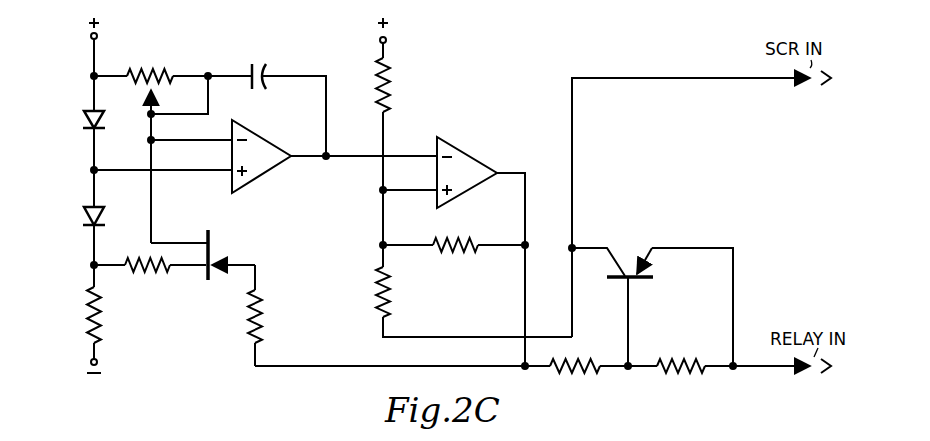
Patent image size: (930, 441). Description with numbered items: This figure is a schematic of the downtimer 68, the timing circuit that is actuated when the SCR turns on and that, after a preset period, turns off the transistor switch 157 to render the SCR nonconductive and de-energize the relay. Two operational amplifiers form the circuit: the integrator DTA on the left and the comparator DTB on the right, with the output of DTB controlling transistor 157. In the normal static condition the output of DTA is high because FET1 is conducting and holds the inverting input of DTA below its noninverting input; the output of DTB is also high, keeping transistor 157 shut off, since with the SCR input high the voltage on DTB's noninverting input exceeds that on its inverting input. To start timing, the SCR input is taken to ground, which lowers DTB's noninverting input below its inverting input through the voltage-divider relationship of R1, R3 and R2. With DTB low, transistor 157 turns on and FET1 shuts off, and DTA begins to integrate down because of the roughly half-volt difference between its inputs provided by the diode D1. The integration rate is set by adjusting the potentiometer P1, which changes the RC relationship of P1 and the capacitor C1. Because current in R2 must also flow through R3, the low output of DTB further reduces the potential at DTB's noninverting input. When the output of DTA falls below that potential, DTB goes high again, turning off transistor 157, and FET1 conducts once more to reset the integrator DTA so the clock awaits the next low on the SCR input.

The downtimer 68 is at (450, 192).
The transistor switch 157 is at (652, 228).
The diode D1 is at (78, 125).
The potentiometer P1 is at (163, 62).
The capacitor C1 is at (262, 70).
The operational amplifier (integrator) DTA is at (265, 176).
The operational amplifier (comparator) DTB is at (475, 152).
The resistor R1 is at (378, 293).
The resistor R2 is at (437, 256).
The resistor R3 is at (387, 80).
The field effect transistor FET1 is at (211, 276).